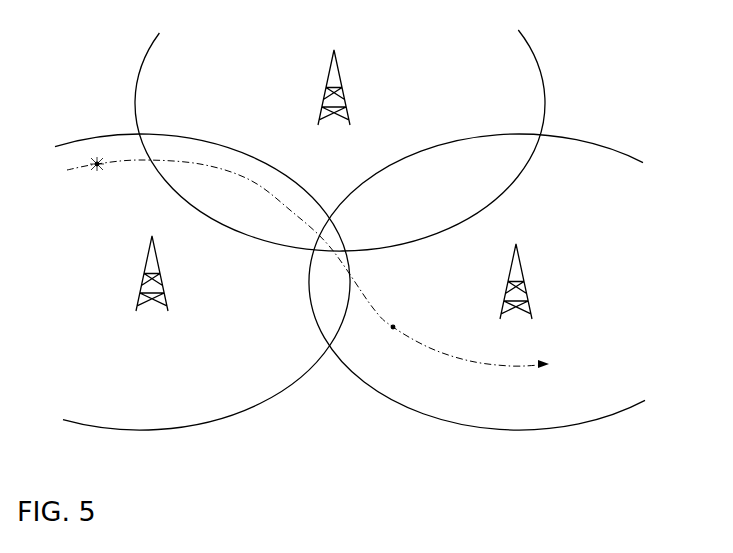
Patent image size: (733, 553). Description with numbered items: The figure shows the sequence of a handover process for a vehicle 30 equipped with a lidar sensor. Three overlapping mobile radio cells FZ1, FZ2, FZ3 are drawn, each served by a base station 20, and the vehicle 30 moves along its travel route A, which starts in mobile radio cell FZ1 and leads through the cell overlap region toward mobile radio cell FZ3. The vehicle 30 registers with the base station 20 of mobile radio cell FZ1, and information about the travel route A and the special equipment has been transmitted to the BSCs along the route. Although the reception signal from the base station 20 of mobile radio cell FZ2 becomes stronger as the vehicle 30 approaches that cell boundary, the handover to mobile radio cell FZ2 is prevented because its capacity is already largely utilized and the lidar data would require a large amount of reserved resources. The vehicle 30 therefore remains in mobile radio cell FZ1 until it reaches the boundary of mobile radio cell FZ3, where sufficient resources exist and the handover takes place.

The base station 20 is at (339, 76).
The vehicle 30 is at (97, 172).
The travel route A is at (394, 325).
The mobile radio cell FZ1 is at (110, 429).
The mobile radio cell FZ2 is at (537, 57).
The mobile radio cell FZ3 is at (523, 432).